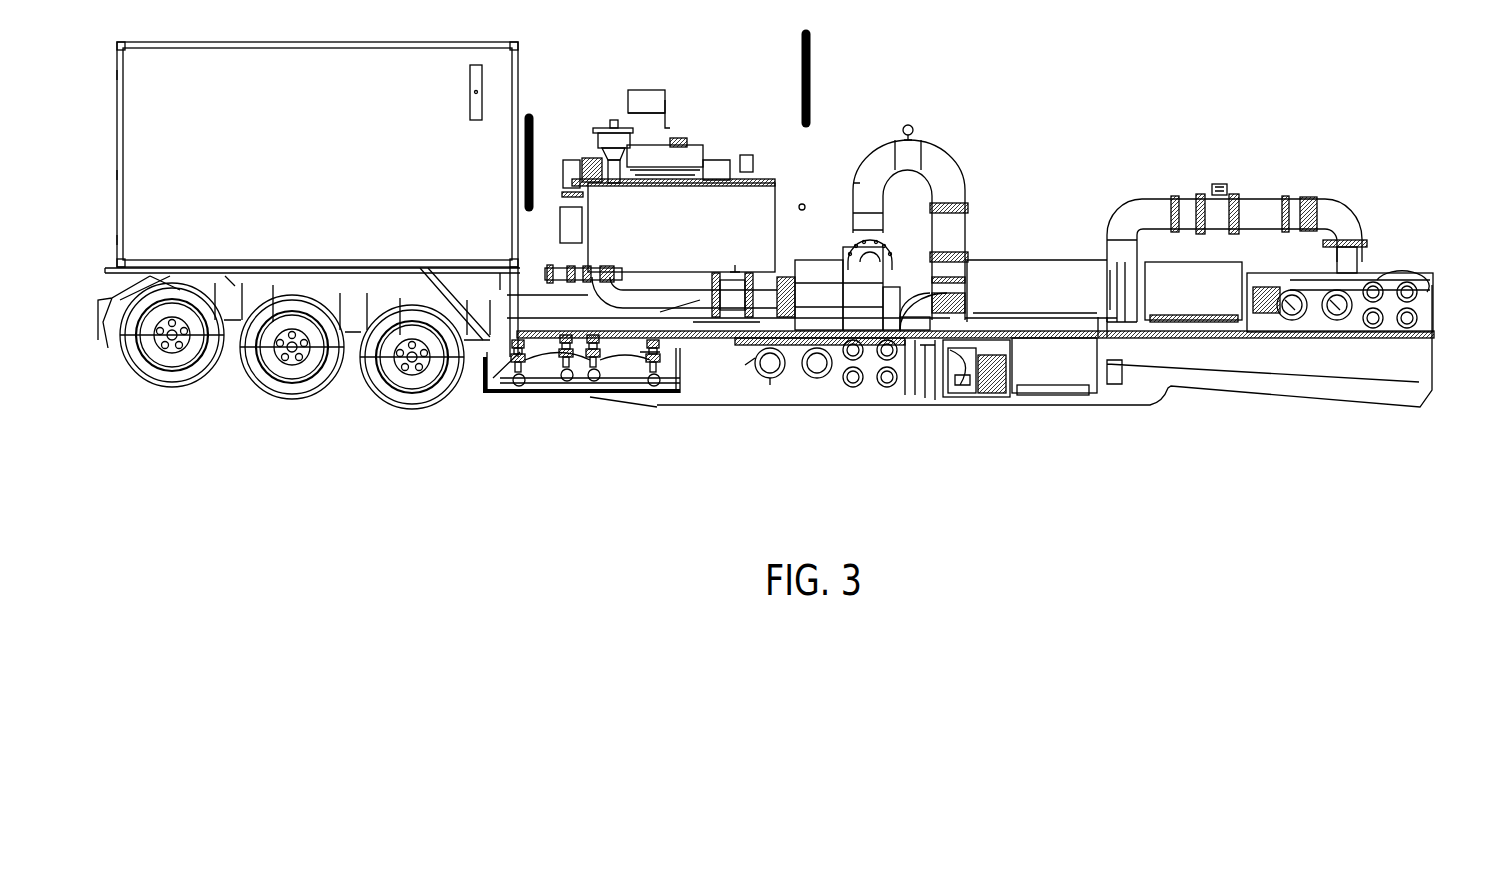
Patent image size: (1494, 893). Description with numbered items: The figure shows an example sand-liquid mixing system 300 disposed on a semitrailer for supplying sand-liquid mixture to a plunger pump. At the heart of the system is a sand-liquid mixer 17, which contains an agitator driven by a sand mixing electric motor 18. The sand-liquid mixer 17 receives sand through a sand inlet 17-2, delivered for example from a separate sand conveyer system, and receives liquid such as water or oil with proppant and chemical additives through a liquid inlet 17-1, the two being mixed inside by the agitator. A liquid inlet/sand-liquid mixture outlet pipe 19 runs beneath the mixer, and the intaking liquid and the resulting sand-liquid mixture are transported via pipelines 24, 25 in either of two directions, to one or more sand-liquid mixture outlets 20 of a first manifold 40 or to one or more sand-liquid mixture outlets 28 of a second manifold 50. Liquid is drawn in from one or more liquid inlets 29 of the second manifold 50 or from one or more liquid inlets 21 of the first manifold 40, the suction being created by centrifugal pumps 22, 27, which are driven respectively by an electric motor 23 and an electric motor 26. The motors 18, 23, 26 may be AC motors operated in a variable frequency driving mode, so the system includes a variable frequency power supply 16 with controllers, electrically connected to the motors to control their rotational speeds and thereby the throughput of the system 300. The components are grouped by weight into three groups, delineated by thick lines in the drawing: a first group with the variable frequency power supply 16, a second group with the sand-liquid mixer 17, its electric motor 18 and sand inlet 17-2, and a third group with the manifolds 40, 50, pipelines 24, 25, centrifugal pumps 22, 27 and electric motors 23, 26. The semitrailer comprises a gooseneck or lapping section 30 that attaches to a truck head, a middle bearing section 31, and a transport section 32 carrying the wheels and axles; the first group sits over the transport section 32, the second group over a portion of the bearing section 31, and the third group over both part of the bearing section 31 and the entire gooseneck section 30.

The sand-liquid mixing system 300 is at (752, 195).
The variable frequency power supply 16 is at (487, 143).
The sand-liquid mixer 17 is at (767, 182).
The liquid inlet 17-1 is at (603, 248).
The sand inlet 17-2 is at (615, 110).
The sand mixing electric motor 18 is at (655, 122).
The liquid inlet/sand-liquid mixture outlet pipe 19 is at (637, 300).
The sand-liquid mixture outlet 20 is at (760, 365).
The liquid inlet of manifold 21 is at (890, 383).
The centrifugal pump 22 is at (817, 268).
The electric motor 23 is at (1070, 372).
The pipeline 24 is at (942, 157).
The pipeline 25 is at (1198, 183).
The electric motor 26 is at (1207, 283).
The centrifugal pump 27 is at (1299, 264).
The sand-liquid mixture outlet 28 is at (1334, 289).
The liquid inlet of manifold 29 is at (1404, 291).
The gooseneck or lapping section of semitrailer 30 is at (1308, 366).
The bearing section of semitrailer 31 is at (948, 407).
The transport section of semitrailer 32 is at (355, 330).
The first manifold 40 is at (837, 365).
The second manifold 50 is at (1359, 311).